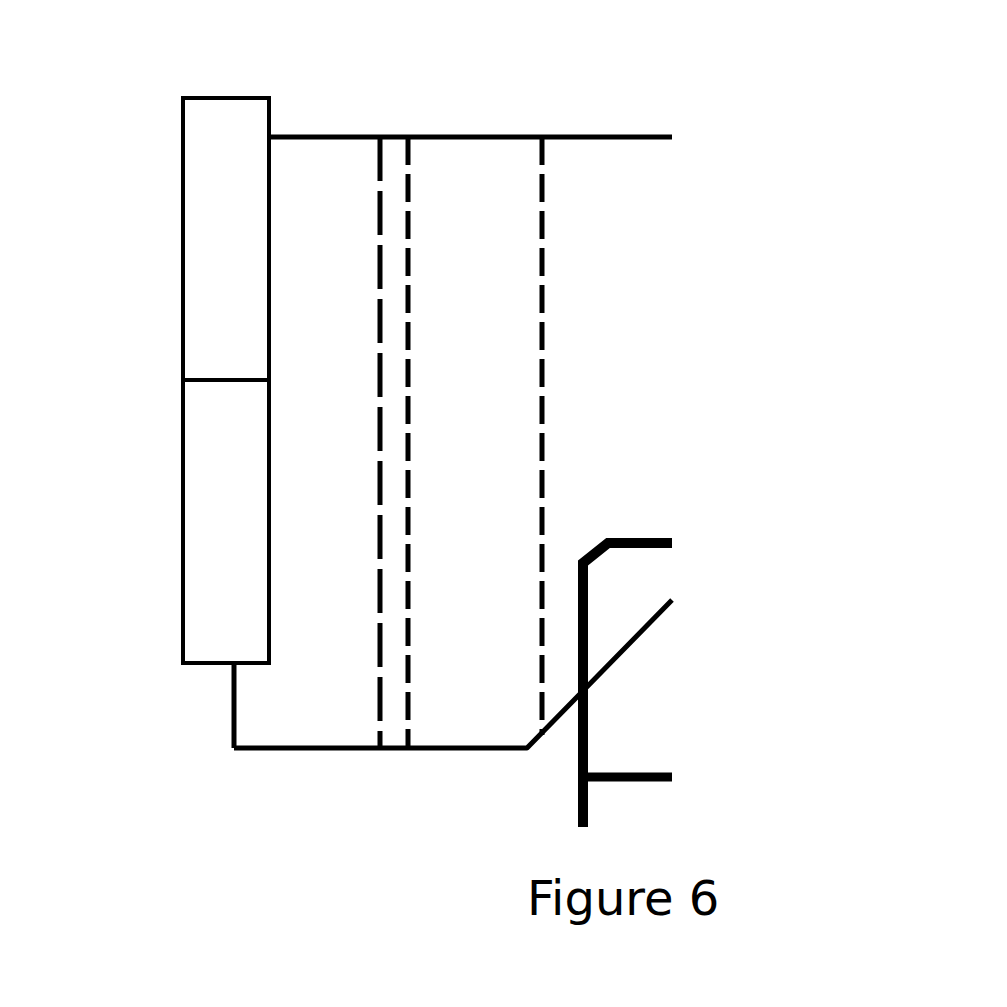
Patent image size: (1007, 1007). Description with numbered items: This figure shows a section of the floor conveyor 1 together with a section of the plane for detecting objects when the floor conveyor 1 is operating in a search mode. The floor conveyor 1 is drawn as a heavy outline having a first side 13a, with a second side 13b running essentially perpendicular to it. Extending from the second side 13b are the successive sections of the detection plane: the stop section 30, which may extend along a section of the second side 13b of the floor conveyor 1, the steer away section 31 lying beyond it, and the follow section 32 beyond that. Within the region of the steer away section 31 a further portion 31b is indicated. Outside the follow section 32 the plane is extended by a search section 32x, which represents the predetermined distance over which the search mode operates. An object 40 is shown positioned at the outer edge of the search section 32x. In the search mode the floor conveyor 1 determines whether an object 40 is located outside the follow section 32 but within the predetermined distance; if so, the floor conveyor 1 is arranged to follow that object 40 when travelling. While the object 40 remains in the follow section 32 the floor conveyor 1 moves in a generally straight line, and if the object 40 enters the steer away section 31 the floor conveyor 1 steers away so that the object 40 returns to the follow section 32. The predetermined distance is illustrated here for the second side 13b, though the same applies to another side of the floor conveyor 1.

The object 40 is at (232, 330).
The search section 32x is at (317, 163).
The follow section 32 is at (474, 397).
The steer away section 31 is at (490, 436).
The layer portion 31b is at (360, 536).
The stop section 30 is at (602, 275).
The first side 13a is at (609, 538).
The second side 13b is at (575, 646).
The floor conveyor 1 is at (530, 787).